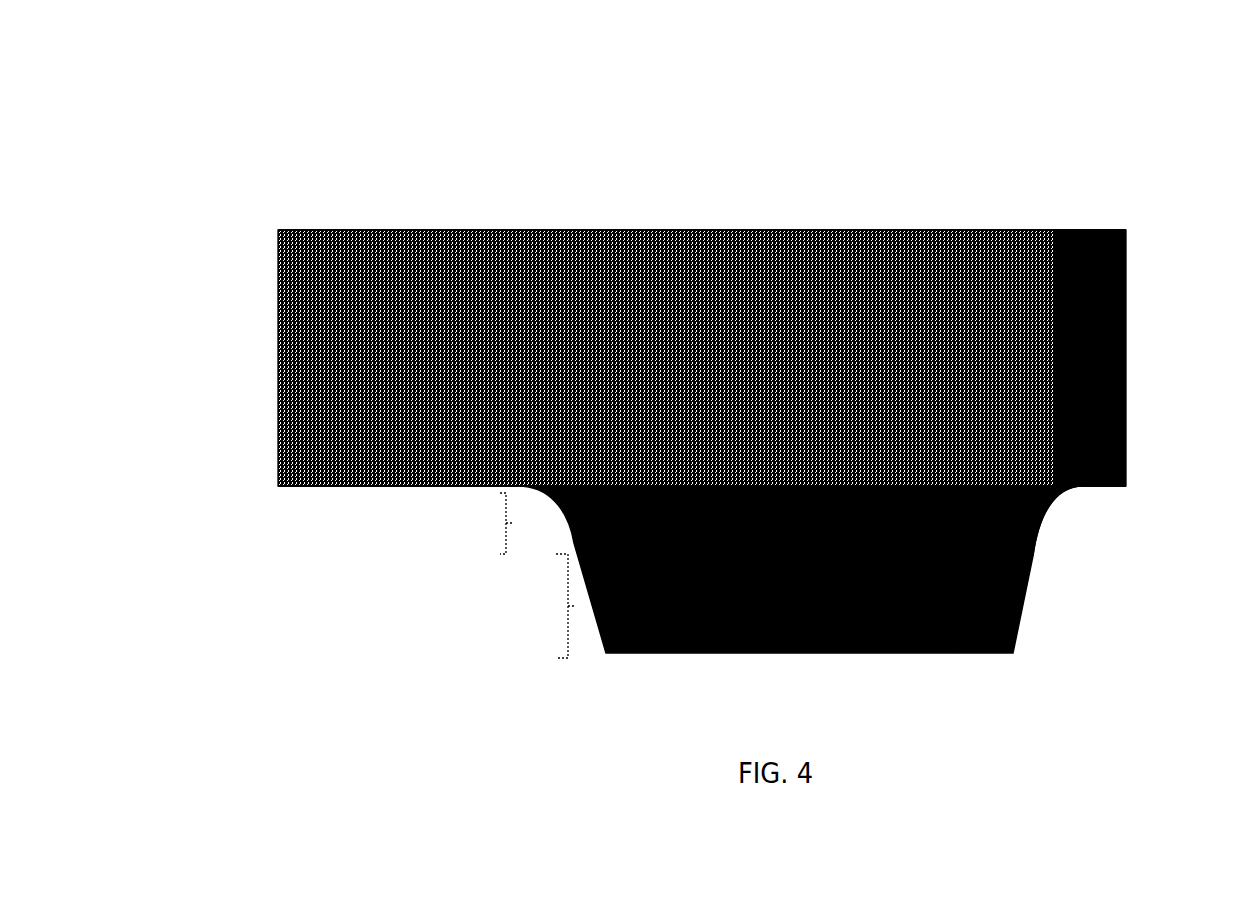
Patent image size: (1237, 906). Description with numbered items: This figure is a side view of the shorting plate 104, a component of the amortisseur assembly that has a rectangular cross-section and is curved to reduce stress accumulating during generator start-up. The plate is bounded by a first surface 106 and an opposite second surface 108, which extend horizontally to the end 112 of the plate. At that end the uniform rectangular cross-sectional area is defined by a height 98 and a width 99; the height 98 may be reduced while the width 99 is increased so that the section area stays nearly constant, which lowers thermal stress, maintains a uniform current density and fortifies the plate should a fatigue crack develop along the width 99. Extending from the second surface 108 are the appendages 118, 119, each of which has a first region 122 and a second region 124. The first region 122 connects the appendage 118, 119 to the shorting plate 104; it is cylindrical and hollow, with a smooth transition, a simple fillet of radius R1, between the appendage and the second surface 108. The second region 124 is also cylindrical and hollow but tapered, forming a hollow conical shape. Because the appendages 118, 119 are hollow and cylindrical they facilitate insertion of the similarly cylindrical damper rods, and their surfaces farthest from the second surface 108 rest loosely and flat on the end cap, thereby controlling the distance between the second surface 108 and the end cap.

The shorting plate 104 is at (1152, 90).
The first surface 106 is at (332, 212).
The width 99 is at (687, 221).
The height 98 is at (262, 347).
The second surface 108 is at (332, 481).
The end 112 is at (420, 437).
The first region 122 is at (476, 523).
The second region 124 is at (544, 606).
The appendage 119 is at (897, 622).
The appendage 118 is at (965, 620).
The fillet radius R1 is at (1063, 500).